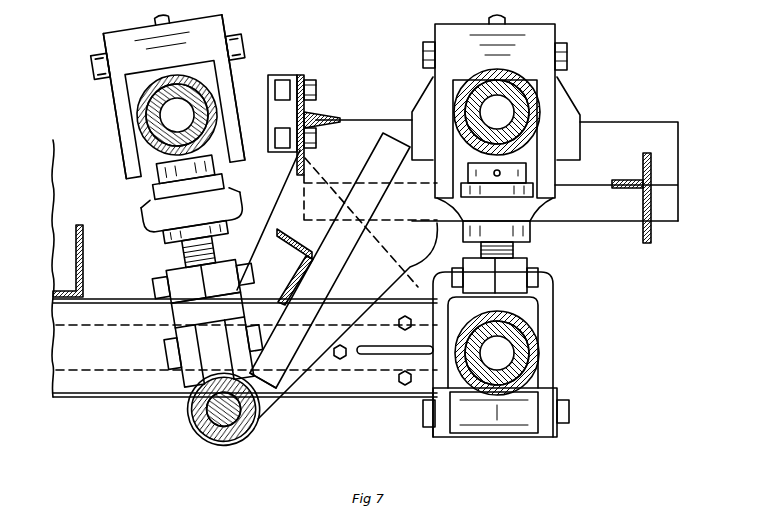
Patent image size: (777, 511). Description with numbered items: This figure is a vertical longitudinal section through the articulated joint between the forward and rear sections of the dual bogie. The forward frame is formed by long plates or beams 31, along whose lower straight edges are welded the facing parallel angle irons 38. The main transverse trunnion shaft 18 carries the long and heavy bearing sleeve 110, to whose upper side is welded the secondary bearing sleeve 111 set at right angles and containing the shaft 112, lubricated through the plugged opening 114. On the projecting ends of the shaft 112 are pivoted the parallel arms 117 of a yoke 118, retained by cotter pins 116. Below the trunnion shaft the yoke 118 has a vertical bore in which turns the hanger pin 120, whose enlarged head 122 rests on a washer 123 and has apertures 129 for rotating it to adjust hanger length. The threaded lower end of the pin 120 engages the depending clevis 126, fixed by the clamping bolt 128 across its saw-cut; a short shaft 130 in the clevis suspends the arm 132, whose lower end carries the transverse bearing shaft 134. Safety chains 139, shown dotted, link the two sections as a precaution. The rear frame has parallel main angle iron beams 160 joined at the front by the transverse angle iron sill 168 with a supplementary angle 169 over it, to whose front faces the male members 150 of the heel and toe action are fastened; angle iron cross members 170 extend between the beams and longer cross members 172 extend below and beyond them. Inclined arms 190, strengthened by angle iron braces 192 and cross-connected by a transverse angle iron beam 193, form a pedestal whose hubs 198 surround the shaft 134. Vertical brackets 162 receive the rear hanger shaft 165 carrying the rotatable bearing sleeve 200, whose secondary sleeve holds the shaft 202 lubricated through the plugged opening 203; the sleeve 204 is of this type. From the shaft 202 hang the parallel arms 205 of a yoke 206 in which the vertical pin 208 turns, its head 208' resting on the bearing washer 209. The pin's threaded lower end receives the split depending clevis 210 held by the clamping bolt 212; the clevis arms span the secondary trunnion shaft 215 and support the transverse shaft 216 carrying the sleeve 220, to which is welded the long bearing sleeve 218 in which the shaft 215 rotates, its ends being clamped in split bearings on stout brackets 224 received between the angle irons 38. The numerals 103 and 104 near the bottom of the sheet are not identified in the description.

The plates or beams 31 is at (58, 350).
The angle irons 38 is at (82, 385).
The bearing sleeve 110 is at (125, 130).
The secondary bearing sleeve 111 is at (115, 33).
The shaft 112 is at (95, 75).
The plugged opening 114 is at (240, 47).
The cotter pins 116 is at (232, 28).
The parallel arms 117 is at (100, 48).
The main transverse trunnion shaft 18 is at (229, 105).
The enlarged head 122 is at (152, 170).
The washer 123 is at (150, 193).
The apertures 129 is at (140, 205).
The safety chains 139 is at (183, 217).
The hanger pin 120 is at (178, 255).
The clamping bolt 128 is at (160, 285).
The depending clevis 126 is at (172, 325).
The short shaft 130 is at (172, 360).
The arm 132 is at (200, 413).
The aligned hubs 198 is at (238, 442).
The angle iron braces 192 is at (352, 262).
The transverse angle iron beam 193 is at (288, 238).
The yoke 118 is at (247, 210).
The inclined arms 190 is at (311, 365).
The transverse bearing shaft 134 is at (250, 418).
The male members 150 is at (277, 78).
The supplementary angle 169 is at (316, 90).
The transverse angle iron sill 168 is at (348, 115).
The stout brackets 224 is at (394, 378).
The sleeve 204 is at (470, 38).
The shaft 202 is at (568, 48).
The plugged opening 203 is at (568, 62).
The rotatable bearing sleeve 200 is at (530, 110).
The rear hanger shaft 165 is at (450, 110).
The vertical brackets 162 is at (585, 110).
The parallel arms 205 is at (450, 130).
The main angle iron beams 160 is at (645, 130).
The angle iron cross members 170 is at (652, 165).
The longer angle iron cross members 172 is at (652, 238).
The head 208' is at (534, 173).
The bearing washer 209 is at (548, 195).
The yoke 206 is at (540, 222).
The vertical pin 208 is at (544, 267).
The clamping bolt 212 is at (540, 280).
The depending clevis 210 is at (555, 318).
The secondary trunnion shaft 215 is at (520, 350).
The long bearing sleeve 218 is at (530, 363).
The sleeve 220 is at (488, 438).
The transverse shaft 216 is at (570, 420).
The numeral 103 is at (147, 503).
The numeral 104 is at (178, 510).